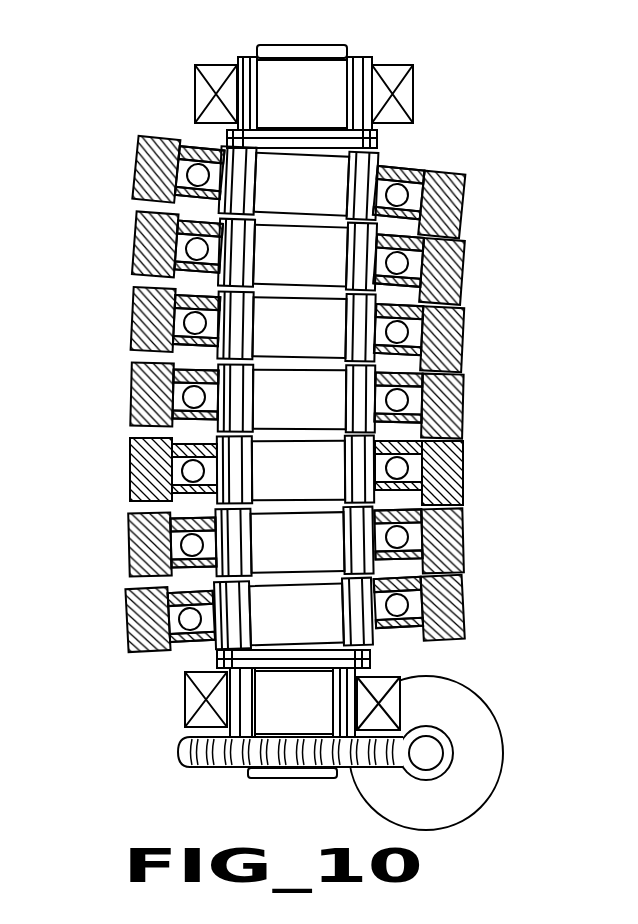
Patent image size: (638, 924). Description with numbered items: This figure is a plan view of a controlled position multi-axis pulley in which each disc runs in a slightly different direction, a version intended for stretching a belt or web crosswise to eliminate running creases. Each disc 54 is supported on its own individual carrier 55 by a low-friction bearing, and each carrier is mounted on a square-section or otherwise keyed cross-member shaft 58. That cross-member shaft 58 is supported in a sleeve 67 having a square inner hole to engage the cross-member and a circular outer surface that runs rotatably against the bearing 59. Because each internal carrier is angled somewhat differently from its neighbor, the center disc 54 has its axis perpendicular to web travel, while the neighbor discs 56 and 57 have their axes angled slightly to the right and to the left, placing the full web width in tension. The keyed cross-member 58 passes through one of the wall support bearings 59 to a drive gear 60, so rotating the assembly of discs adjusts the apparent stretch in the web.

The disc 54 is at (447, 400).
The carrier 55 is at (330, 630).
The neighbor disc 56 is at (448, 261).
The neighbor disc 57 is at (443, 533).
The cross-member shaft 58 is at (263, 772).
The bearing 59 is at (405, 95).
The drive gear 60 is at (178, 745).
The sleeve 67 is at (340, 140).